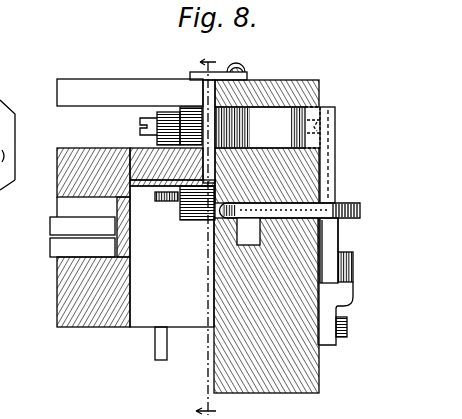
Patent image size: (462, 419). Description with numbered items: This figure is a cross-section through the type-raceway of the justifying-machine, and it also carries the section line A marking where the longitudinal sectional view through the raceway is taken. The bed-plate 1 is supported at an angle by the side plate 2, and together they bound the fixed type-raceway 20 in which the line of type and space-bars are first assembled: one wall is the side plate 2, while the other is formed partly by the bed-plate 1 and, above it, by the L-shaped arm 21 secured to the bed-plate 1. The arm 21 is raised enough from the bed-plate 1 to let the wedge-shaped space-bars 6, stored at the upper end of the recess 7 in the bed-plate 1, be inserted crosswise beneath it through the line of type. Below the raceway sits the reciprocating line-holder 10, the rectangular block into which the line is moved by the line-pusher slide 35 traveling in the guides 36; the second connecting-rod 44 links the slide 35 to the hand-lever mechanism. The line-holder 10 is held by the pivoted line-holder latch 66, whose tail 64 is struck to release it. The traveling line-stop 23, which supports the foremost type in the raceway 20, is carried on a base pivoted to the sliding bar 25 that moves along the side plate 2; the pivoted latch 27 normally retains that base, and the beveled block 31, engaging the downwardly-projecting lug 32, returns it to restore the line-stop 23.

The bed-plate 1 is at (67, 291).
The side plate 2 is at (306, 375).
The space-bars 6 is at (62, 251).
The recess 7 is at (67, 205).
The reciprocating line-holder 10 is at (142, 148).
The type-raceway 20 is at (238, 73).
The L-shaped arm 21 is at (95, 94).
The traveling line-stop 23 is at (260, 127).
The sliding bar 25 is at (243, 238).
The pivoted latch 27 is at (345, 204).
The beveled block 31 is at (350, 275).
The downwardly-projecting lug 32 is at (328, 248).
The line-pusher slide 35 is at (190, 118).
The guides 36 is at (208, 96).
The second connecting-rod 44 is at (153, 352).
The tail of the line-holder latch 64 is at (204, 221).
The line-holder latch 66 is at (177, 214).
The section line A A is at (195, 53).